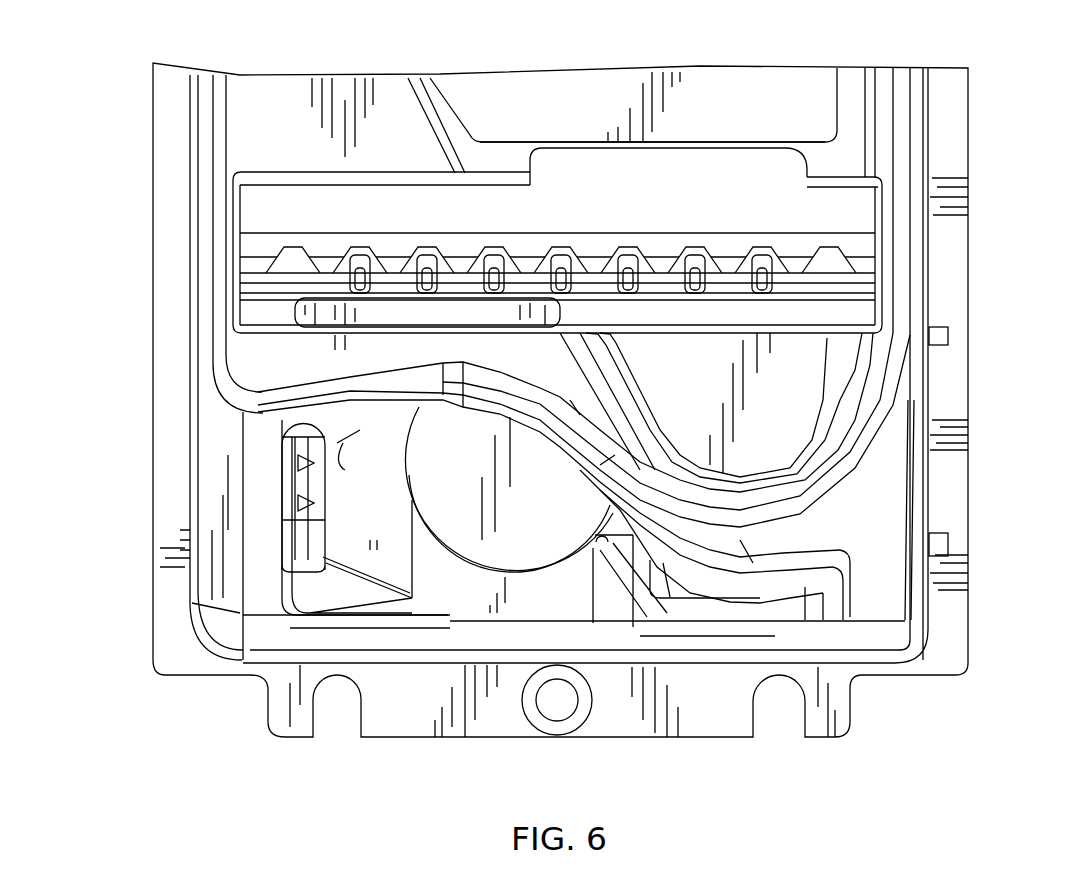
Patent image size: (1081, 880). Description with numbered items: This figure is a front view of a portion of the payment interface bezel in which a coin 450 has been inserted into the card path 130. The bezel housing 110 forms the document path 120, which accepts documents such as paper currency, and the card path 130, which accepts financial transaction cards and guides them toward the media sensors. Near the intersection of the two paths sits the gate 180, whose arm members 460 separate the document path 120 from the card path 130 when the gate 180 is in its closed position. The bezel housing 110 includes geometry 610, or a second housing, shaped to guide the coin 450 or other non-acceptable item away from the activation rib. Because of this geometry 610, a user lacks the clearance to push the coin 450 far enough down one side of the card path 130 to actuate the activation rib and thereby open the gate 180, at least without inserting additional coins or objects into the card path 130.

The bezel housing 110 is at (237, 108).
The document path 120 is at (773, 178).
The arm members 460 is at (560, 262).
The gate 180 is at (722, 288).
The coin 450 is at (420, 487).
The bezel housing geometry 610 is at (840, 560).
The card path 130 is at (620, 540).